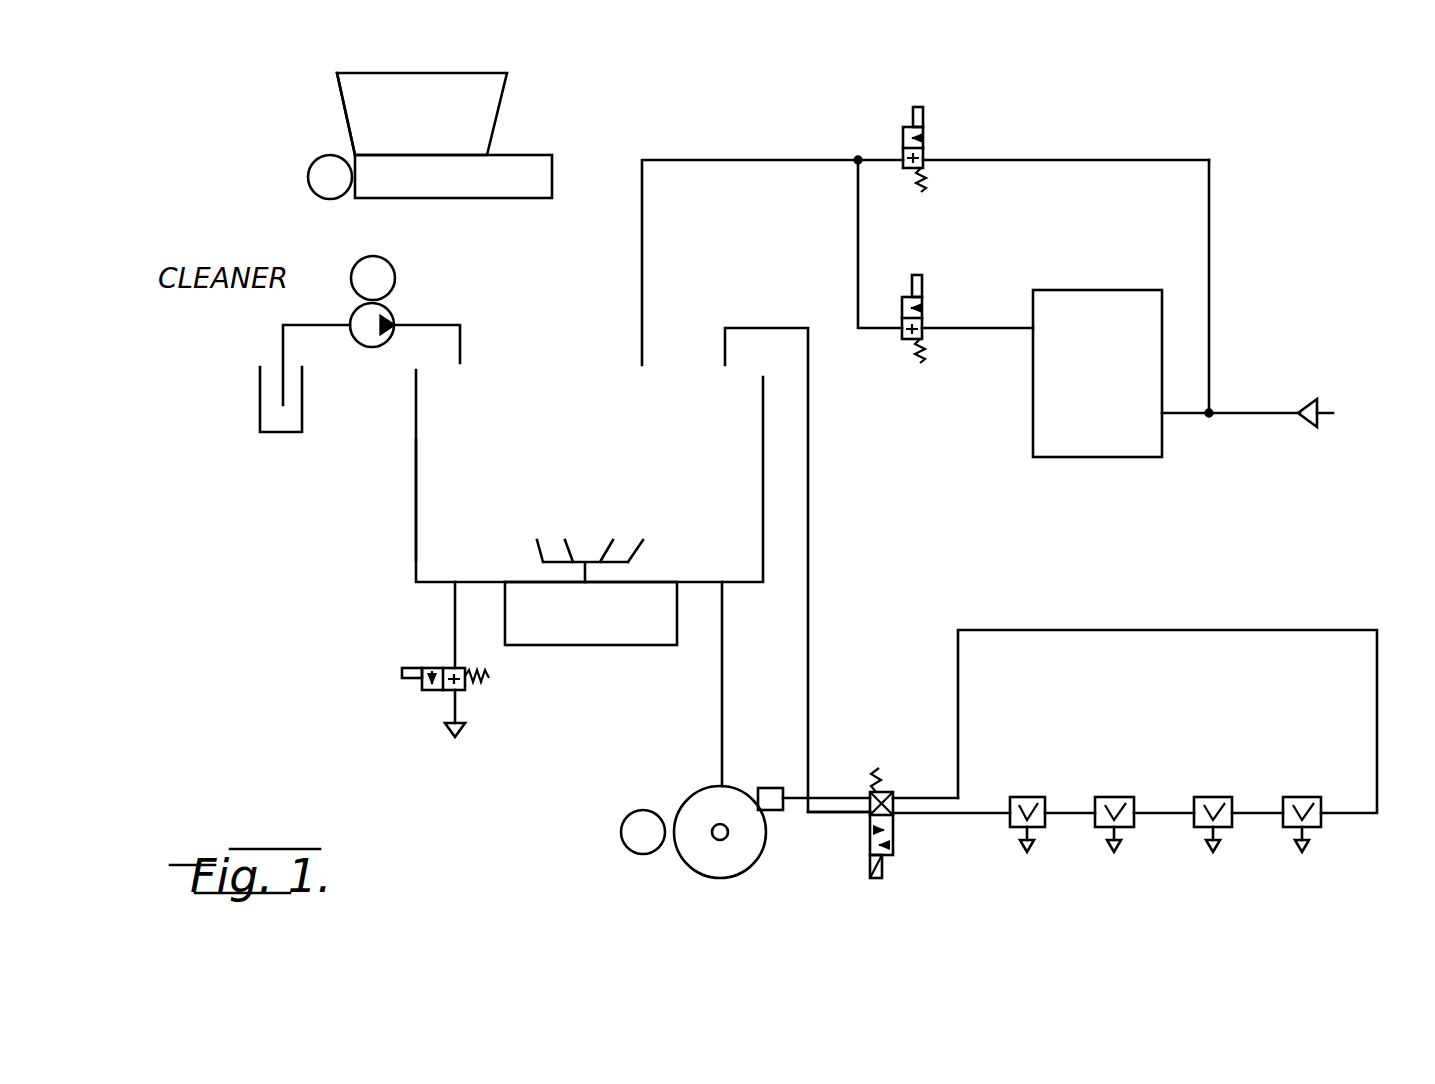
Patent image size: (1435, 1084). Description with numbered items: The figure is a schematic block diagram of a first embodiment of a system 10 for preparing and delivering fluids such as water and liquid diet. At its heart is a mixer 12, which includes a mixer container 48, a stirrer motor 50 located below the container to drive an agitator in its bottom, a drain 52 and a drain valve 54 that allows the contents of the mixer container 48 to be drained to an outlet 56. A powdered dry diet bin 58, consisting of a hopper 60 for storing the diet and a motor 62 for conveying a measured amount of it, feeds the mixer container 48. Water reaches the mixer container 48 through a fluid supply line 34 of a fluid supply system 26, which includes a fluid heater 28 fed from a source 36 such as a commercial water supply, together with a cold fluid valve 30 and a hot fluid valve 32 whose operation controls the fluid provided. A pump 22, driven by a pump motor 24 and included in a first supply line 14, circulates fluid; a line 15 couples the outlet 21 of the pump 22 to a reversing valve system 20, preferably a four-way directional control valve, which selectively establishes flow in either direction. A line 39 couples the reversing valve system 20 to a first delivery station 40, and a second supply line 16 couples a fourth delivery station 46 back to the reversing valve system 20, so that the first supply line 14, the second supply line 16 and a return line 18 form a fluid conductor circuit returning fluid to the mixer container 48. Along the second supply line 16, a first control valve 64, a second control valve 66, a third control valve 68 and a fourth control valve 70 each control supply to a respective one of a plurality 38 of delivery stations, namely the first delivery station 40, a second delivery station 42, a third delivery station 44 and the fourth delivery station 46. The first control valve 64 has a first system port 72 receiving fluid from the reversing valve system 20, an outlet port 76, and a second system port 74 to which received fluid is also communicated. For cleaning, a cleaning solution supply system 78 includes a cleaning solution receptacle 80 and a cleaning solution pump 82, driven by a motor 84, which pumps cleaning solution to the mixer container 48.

The system 10 is at (228, 773).
The mixer 12 is at (396, 572).
The first supply line 14 is at (714, 727).
The line 15 is at (830, 798).
The second supply line 16 is at (1000, 630).
The return line 18 is at (810, 668).
The reversing valve system 20 is at (907, 833).
The outlet 21 is at (765, 788).
The pump 22 is at (765, 847).
The pump motor 24 is at (625, 843).
The fluid supply system 26 is at (1225, 292).
The fluid heater 28 is at (1112, 447).
The cold fluid valve 30 is at (933, 140).
The hot fluid valve 32 is at (902, 305).
The fluid supply line 34 is at (796, 160).
The source of fluid 36 is at (1313, 420).
The plurality of delivery stations 38 is at (1135, 903).
The line 39 is at (928, 800).
The first delivery station 40 is at (1032, 850).
The second delivery station 42 is at (1125, 855).
The third delivery station 44 is at (1222, 855).
The fourth delivery station 46 is at (1305, 855).
The mixer container 48 is at (413, 497).
The stirrer motor 50 is at (600, 648).
The drain 52 is at (455, 588).
The drain valve 54 is at (420, 688).
The outlet 56 is at (460, 722).
The powdered dry diet bin 58 is at (520, 133).
The hopper 60 is at (335, 92).
The motor 62 is at (320, 197).
The first control valve 64 is at (1027, 797).
The second control valve 66 is at (1120, 797).
The third control valve 68 is at (1218, 797).
The fourth control valve 70 is at (1305, 797).
The first system port 72 is at (1008, 810).
The second system port 74 is at (1047, 812).
The outlet port 76 is at (1010, 825).
The cleaning solution supply system 78 is at (257, 455).
The cleaning solution receptacle 80 is at (258, 407).
The cleaning solution pump 82 is at (393, 320).
The motor 84 is at (395, 278).